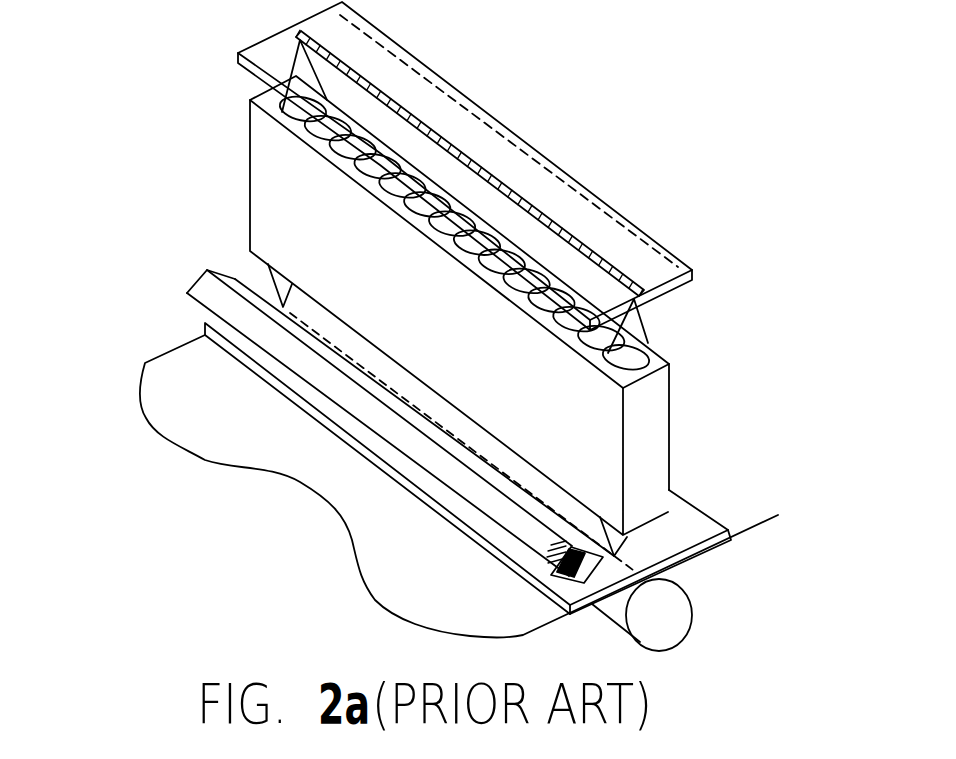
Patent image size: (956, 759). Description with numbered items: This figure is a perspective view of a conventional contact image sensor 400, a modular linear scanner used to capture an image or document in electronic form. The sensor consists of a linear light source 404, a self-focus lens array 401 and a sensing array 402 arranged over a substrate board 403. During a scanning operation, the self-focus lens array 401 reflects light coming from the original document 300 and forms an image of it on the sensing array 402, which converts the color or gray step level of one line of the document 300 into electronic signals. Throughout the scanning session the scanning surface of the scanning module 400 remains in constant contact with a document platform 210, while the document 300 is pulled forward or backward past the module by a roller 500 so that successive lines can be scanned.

The contact image sensor 400 is at (766, 14).
The self-focus lens array 401 is at (663, 434).
The sensing array 402 is at (378, 90).
The substrate board 403 is at (641, 266).
The linear light source 404 is at (214, 279).
The document platform 210 is at (210, 326).
The document 300 is at (208, 426).
The roller 500 is at (657, 623).